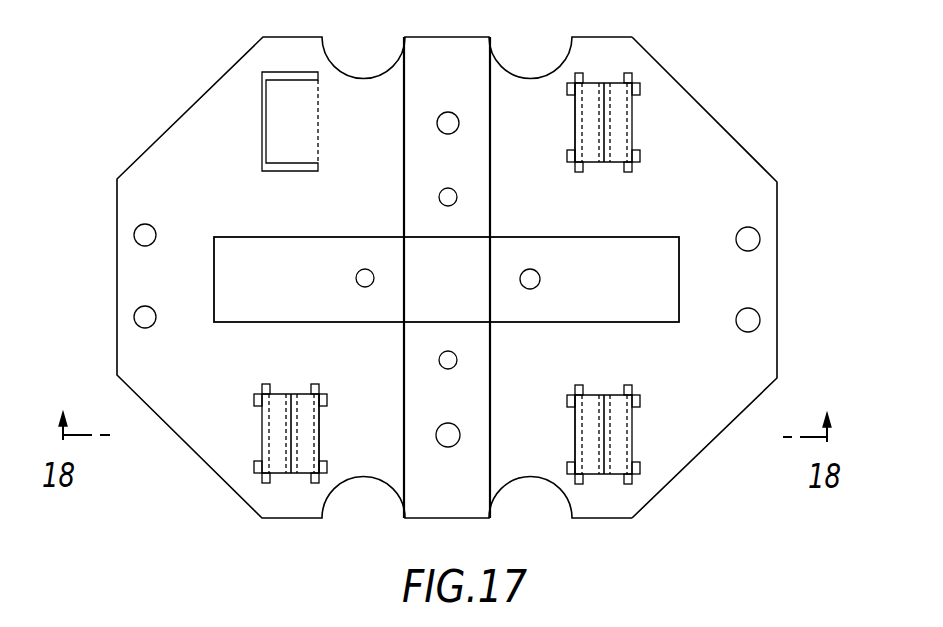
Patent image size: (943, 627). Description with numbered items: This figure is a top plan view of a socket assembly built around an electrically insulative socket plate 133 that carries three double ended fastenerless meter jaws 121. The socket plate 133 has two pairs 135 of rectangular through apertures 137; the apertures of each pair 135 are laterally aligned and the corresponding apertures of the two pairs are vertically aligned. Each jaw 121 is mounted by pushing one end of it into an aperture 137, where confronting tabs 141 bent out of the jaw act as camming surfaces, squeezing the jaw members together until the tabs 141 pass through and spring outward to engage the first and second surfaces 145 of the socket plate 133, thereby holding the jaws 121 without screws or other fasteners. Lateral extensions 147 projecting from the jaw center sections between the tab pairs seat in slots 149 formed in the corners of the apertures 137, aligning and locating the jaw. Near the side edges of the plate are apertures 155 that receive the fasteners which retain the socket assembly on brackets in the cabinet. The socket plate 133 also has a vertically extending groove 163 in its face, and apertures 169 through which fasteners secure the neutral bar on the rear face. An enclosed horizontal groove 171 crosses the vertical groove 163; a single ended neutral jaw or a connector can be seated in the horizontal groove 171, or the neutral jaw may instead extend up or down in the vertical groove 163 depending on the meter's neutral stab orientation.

The double ended fastenerless meter jaw 121 is at (436, 292).
The socket plate 133 is at (722, 127).
The pair of rectangular through apertures 135 is at (318, 133).
The rectangular through aperture 137 is at (318, 92).
The confronting tab 141 is at (255, 395).
The surface of the socket plate 145 is at (766, 266).
The lateral extension 147 is at (314, 484).
The slot 149 is at (262, 74).
The aperture 155 is at (153, 243).
The vertical groove 163 is at (490, 200).
The aperture 169 is at (449, 112).
The horizontal groove 171 is at (599, 237).